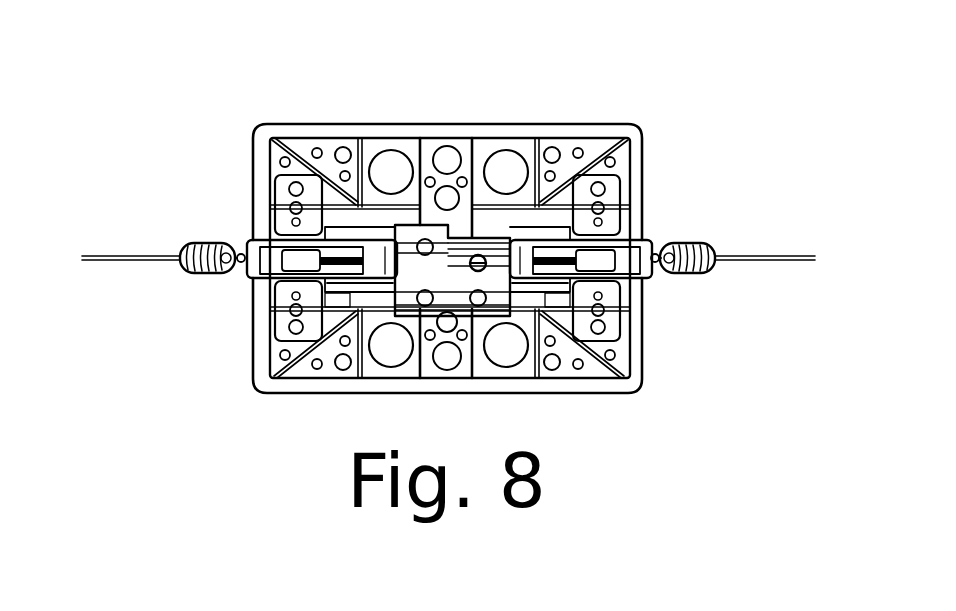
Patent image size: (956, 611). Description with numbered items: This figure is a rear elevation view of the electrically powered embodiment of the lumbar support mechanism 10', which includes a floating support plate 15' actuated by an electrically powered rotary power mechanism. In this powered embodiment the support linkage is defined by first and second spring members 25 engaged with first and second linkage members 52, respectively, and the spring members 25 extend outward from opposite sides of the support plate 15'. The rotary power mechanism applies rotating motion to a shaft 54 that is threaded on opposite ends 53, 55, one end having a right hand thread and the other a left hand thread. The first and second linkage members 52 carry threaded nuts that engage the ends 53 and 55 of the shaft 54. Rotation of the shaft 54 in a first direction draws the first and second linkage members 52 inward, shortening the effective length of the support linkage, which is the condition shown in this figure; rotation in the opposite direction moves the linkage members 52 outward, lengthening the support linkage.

The lumbar support mechanism 10' is at (447, 200).
The floating support plate 15' is at (450, 215).
The spring member 25 is at (130, 255).
The linkage member 52 is at (247, 242).
The threaded end 53 is at (598, 327).
The shaft 54 is at (345, 262).
The threaded end 55 is at (323, 317).